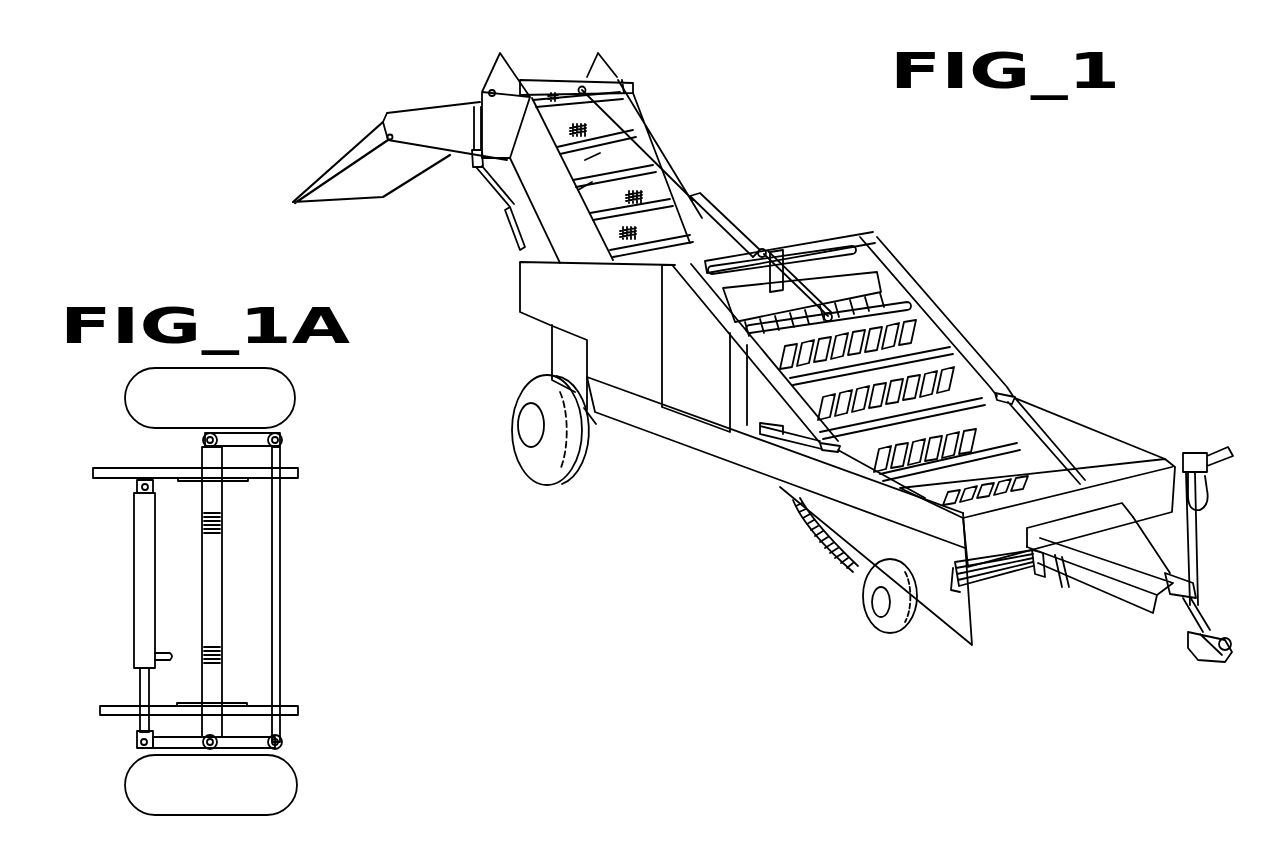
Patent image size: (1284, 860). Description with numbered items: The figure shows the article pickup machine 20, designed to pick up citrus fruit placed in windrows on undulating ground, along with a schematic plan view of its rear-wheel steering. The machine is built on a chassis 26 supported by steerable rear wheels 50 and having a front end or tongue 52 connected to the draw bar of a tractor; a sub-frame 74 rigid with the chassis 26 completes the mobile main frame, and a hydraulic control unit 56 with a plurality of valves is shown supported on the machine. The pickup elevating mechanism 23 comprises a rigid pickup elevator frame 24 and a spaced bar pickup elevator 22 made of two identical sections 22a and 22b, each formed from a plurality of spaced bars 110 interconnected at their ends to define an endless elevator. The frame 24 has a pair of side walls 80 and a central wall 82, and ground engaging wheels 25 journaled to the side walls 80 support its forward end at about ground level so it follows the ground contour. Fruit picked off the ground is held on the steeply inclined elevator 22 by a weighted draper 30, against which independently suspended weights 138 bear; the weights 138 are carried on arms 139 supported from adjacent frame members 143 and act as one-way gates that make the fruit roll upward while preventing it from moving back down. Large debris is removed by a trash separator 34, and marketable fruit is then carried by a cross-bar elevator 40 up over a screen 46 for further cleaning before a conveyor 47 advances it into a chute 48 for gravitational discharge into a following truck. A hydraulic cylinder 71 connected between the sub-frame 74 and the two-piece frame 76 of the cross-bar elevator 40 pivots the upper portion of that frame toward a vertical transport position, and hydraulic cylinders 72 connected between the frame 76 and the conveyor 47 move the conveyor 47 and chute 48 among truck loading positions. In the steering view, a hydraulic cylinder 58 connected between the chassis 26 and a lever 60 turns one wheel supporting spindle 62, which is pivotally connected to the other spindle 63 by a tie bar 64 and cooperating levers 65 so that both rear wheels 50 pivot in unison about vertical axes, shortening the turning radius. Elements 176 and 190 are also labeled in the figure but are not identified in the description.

In FIG. 1, the article pickup machine 20 is at (1034, 296).
In FIG. 1, the spaced bar pickup elevator 22 is at (1001, 605).
In FIG. 1, the elevator section 22a is at (1053, 572).
In FIG. 1, the elevator section 22b is at (992, 566).
In FIG. 1, the pickup elevating mechanism 23 is at (969, 384).
In FIG. 1, the pickup elevator frame 24 is at (948, 652).
In FIG. 1, the ground engaging wheels 25 is at (884, 620).
In FIG. 1, the chassis 26 is at (750, 465).
In FIG. 1A, the chassis 26 is at (290, 472).
In FIG. 1, the weighted draper 30 is at (990, 482).
In FIG. 1, the trash separator 34 is at (896, 289).
In FIG. 1, the cross-bar elevator 40 is at (675, 155).
In FIG. 1, the screen 46 is at (558, 134).
In FIG. 1, the conveyor 47 is at (417, 91).
In FIG. 1, the chute 48 is at (318, 182).
In FIG. 1, the steerable rear wheels 50 is at (568, 480).
In FIG. 1A, the steerable rear wheels 50 is at (296, 396).
In FIG. 1, the tongue 52 is at (1150, 606).
In FIG. 1, the control unit 56 is at (1233, 455).
In FIG. 1A, the hydraulic cylinder 58 is at (133, 578).
In FIG. 1A, the lever 60 is at (162, 750).
In FIG. 1A, the wheel supporting spindle 62 is at (208, 752).
In FIG. 1A, the wheel supporting spindle 63 is at (202, 440).
In FIG. 1A, the tie bar 64 is at (281, 578).
In FIG. 1A, the levers 65 is at (246, 433).
In FIG. 1, the hydraulic cylinder 71 is at (736, 226).
In FIG. 1, the hydraulic cylinders 72 is at (522, 236).
In FIG. 1, the sub-frame 74 is at (668, 356).
In FIG. 1, the two-piece frame 76 is at (636, 112).
In FIG. 1, the side walls 80 is at (856, 555).
In FIG. 1, the central wall 82 is at (1037, 580).
In FIG. 1, the spaced bars 110 is at (965, 588).
In FIG. 1, the weights 138 is at (906, 333).
In FIG. 1, the arms 139 is at (962, 452).
In FIG. 1, the frame members 143 is at (984, 408).
In FIG. 1, the conveyor flight 176 is at (600, 208).
In FIG. 1, the hood side plate 190 is at (427, 145).